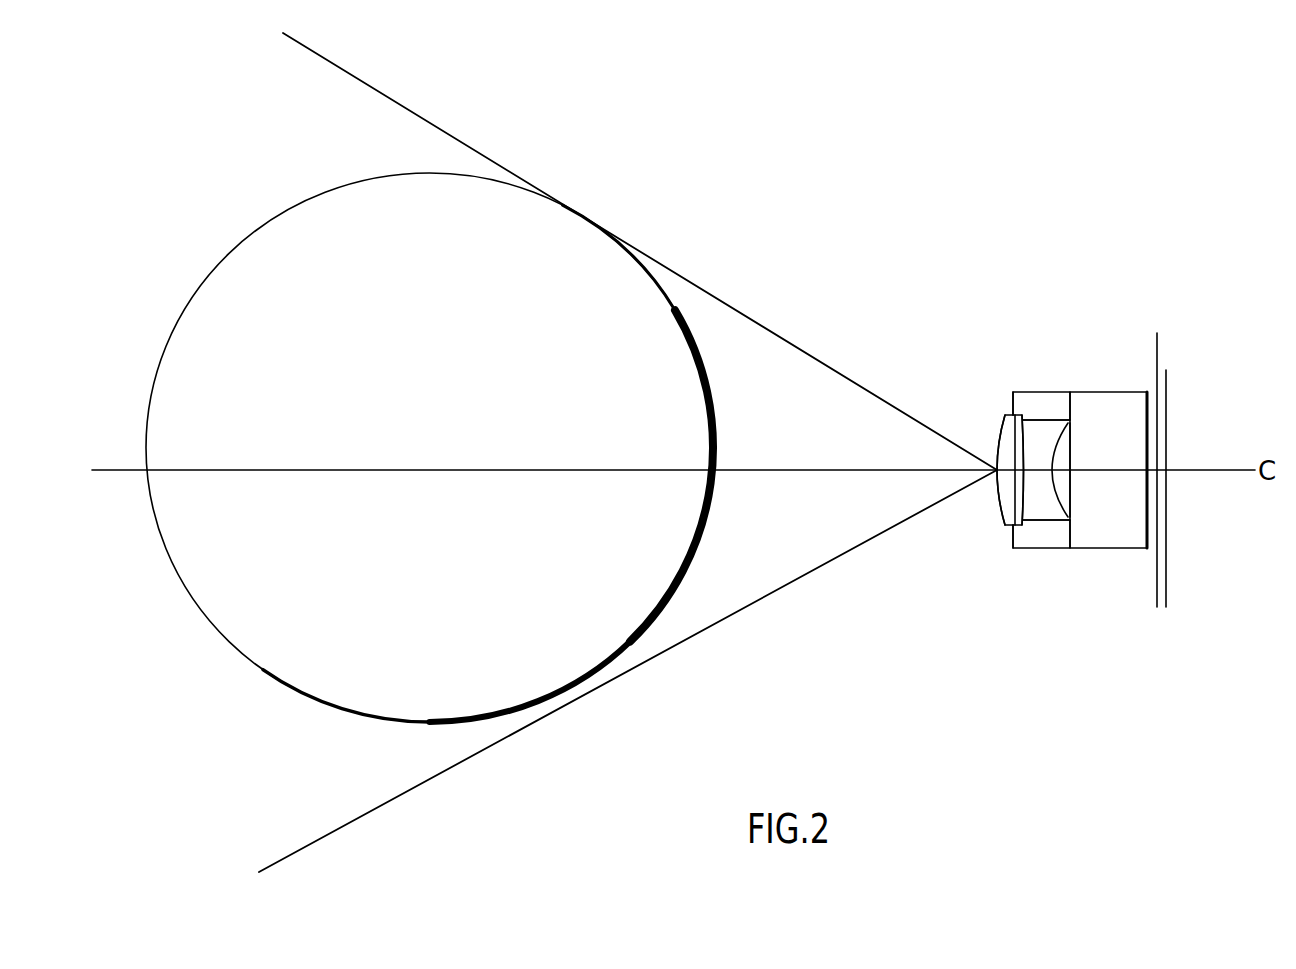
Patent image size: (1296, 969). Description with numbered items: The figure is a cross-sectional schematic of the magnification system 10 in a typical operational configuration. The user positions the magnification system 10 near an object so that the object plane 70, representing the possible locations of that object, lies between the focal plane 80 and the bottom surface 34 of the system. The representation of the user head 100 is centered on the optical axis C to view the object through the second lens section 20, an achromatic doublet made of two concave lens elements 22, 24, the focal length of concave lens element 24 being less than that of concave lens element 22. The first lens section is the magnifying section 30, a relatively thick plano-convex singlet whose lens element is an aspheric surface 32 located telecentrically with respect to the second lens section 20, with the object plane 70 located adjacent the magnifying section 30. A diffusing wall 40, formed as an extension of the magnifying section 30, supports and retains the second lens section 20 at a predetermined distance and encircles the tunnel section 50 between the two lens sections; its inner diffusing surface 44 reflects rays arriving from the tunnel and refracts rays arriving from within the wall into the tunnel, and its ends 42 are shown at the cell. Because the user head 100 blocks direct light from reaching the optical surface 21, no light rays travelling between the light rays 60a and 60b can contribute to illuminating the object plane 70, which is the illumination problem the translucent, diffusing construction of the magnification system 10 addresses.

The magnification system 10 is at (1102, 297).
The second lens section 20 is at (1007, 497).
The optical surface 21 is at (995, 487).
The concave lens element 22 is at (1010, 450).
The concave lens element 24 is at (1017, 432).
The magnifying section 30 is at (1121, 438).
The aspheric surface 32 is at (1055, 483).
The bottom surface 34 is at (1148, 422).
The diffusing wall 40 is at (1037, 400).
The front end of lens holder 42 is at (1022, 388).
The inner diffusing surface 44 is at (1057, 417).
The tunnel section 50 is at (1065, 497).
The light ray 60a is at (610, 678).
The light ray 60b is at (492, 160).
The object plane 70 is at (1177, 481).
The focal plane 80 is at (1185, 488).
The user head 100 is at (427, 316).